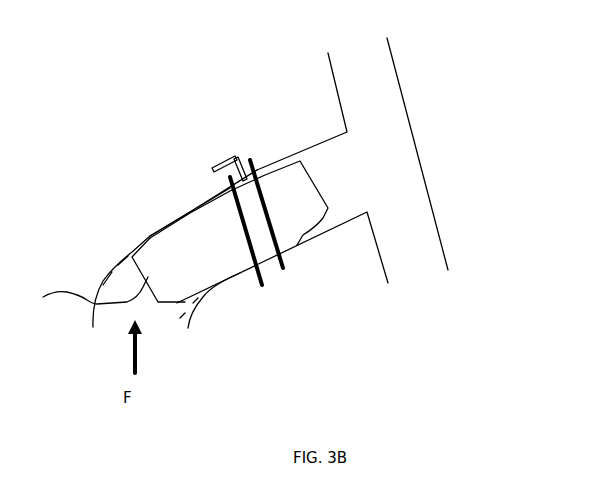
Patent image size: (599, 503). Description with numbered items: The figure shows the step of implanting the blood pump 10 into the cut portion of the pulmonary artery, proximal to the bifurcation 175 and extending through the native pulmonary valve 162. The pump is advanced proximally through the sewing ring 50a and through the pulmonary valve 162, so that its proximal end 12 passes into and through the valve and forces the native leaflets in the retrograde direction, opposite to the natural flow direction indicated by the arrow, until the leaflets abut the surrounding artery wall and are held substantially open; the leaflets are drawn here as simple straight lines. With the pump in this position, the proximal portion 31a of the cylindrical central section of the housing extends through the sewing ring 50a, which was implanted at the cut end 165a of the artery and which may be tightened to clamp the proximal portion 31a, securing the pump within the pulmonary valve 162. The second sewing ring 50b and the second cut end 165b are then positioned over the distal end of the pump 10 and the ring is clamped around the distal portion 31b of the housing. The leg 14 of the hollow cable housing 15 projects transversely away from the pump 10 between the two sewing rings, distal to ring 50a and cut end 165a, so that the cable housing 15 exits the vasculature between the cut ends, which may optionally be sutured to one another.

The blood pump 10 is at (287, 228).
The proximal end 12 is at (131, 300).
The leg 14 is at (236, 154).
The cable housing 15 is at (228, 157).
The proximal portion 31a is at (153, 229).
The distal portion 31b is at (263, 166).
The sewing ring 50a is at (260, 270).
The second sewing ring 50b is at (285, 258).
The pulmonary valve 162 is at (122, 257).
The cut end 165a is at (219, 184).
The second cut end 165b is at (267, 146).
The bifurcation 175 is at (375, 148).